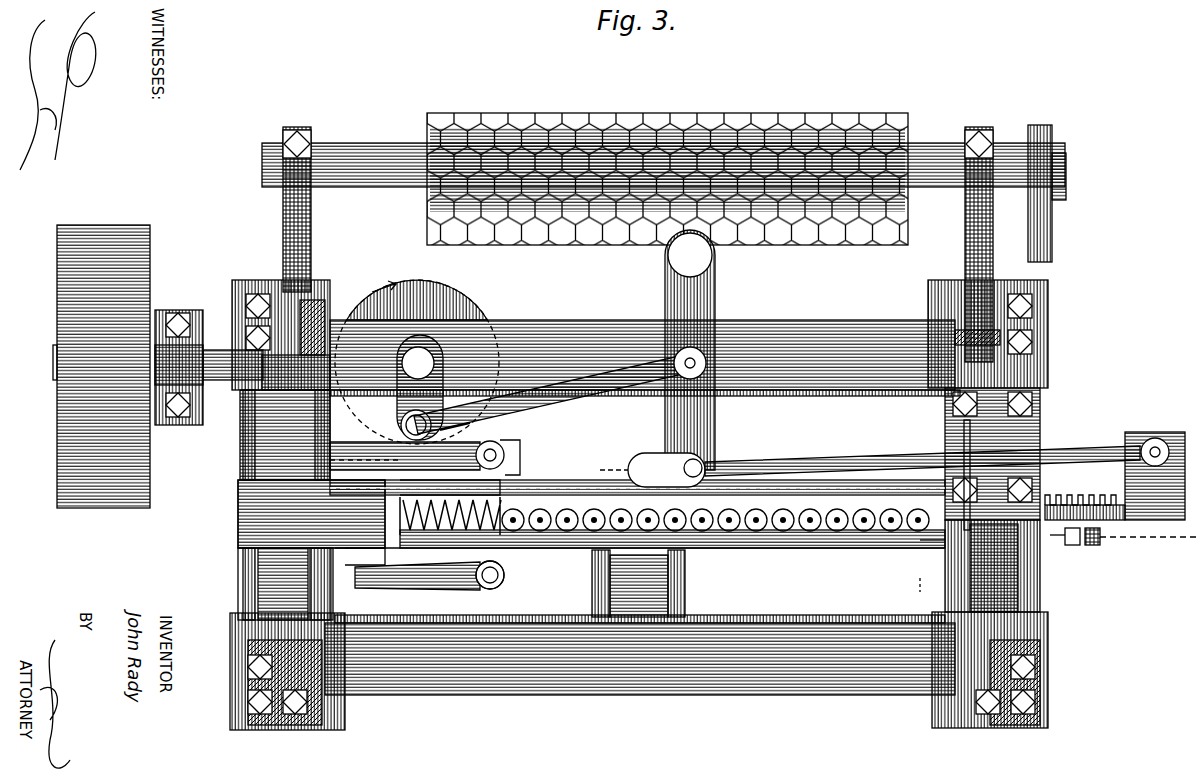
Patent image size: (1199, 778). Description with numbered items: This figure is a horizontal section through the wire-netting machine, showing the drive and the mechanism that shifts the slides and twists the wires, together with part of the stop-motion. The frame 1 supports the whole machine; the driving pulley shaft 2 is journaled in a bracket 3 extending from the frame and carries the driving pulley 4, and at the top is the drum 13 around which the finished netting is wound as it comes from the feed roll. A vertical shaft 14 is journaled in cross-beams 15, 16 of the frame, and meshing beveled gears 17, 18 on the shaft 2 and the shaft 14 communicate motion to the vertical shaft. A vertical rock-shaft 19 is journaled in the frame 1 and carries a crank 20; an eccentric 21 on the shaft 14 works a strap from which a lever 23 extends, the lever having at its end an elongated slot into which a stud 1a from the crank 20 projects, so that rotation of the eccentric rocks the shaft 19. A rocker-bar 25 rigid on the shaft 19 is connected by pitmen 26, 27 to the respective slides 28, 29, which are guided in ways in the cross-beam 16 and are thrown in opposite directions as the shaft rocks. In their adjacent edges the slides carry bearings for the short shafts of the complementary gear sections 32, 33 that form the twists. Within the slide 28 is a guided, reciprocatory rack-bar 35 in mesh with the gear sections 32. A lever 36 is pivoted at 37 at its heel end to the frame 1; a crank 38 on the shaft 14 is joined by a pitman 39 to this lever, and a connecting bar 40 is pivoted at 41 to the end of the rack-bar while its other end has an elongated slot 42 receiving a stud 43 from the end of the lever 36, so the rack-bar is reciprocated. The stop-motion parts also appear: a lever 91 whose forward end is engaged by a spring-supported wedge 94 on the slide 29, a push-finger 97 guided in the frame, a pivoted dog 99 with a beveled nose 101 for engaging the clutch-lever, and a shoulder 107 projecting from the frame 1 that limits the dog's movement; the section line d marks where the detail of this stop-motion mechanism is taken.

The frame 1 is at (950, 335).
The stud 1a is at (640, 582).
The driving pulley shaft 2 is at (234, 382).
The bracket 3 is at (190, 310).
The driving pulley 4 is at (57, 395).
The drum 13 is at (514, 118).
The vertical shaft 14 is at (420, 387).
The cross-beam 15 is at (570, 322).
The cross-beam 16 is at (608, 678).
The beveled gear 17 is at (285, 435).
The beveled gear 18 is at (480, 302).
The vertical rock-shaft 19 is at (238, 555).
The crank 20 is at (372, 550).
The eccentric 21 is at (488, 421).
The lever 23 is at (340, 522).
The rocker-bar 25 is at (238, 505).
The pitman 26 is at (352, 460).
The pitman 27 is at (429, 585).
The slide 28 is at (535, 482).
The slide 29 is at (553, 540).
The gear section 32 is at (470, 495).
The gear section 33 is at (810, 510).
The rack-bar 35 is at (450, 516).
The lever 36 is at (715, 421).
The pivot 37 is at (690, 255).
The crank 38 is at (418, 414).
The pitman 39 is at (545, 405).
The connecting bar 40 is at (865, 458).
The pivot 41 is at (1155, 438).
The elongated slot 42 is at (652, 470).
The stud 43 is at (693, 459).
The lever 91 is at (964, 437).
The wedge 94 is at (925, 542).
The push-finger 97 is at (1075, 546).
The dog 99 is at (1100, 540).
The beveled nose 101 is at (1104, 540).
The shoulder 107 is at (1090, 546).
The section line d d is at (920, 594).